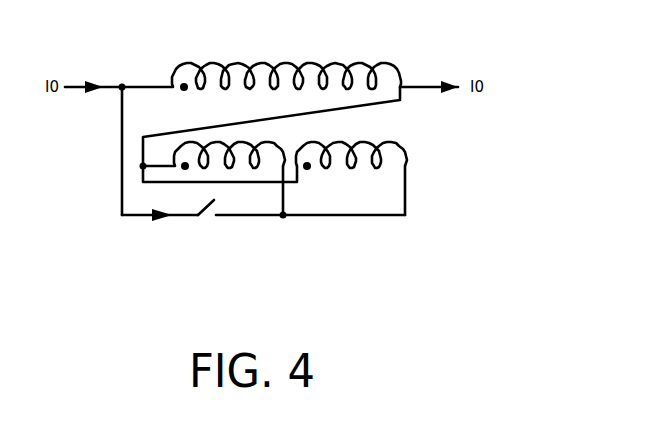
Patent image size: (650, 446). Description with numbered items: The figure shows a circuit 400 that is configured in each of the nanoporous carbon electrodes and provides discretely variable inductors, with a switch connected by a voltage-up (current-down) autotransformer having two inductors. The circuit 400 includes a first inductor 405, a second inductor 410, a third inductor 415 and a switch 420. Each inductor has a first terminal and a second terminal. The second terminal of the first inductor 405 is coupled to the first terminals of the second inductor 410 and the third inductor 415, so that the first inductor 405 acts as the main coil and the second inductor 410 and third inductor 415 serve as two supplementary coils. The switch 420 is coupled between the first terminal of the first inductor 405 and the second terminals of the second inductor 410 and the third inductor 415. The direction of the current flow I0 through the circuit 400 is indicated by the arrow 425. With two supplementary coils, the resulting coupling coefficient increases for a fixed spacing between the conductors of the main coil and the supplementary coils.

The circuit 400 is at (362, 255).
The first inductor 405 is at (288, 60).
The second inductor 410 is at (272, 143).
The third inductor 415 is at (398, 142).
The switch 420 is at (203, 219).
The arrow 425 is at (88, 82).